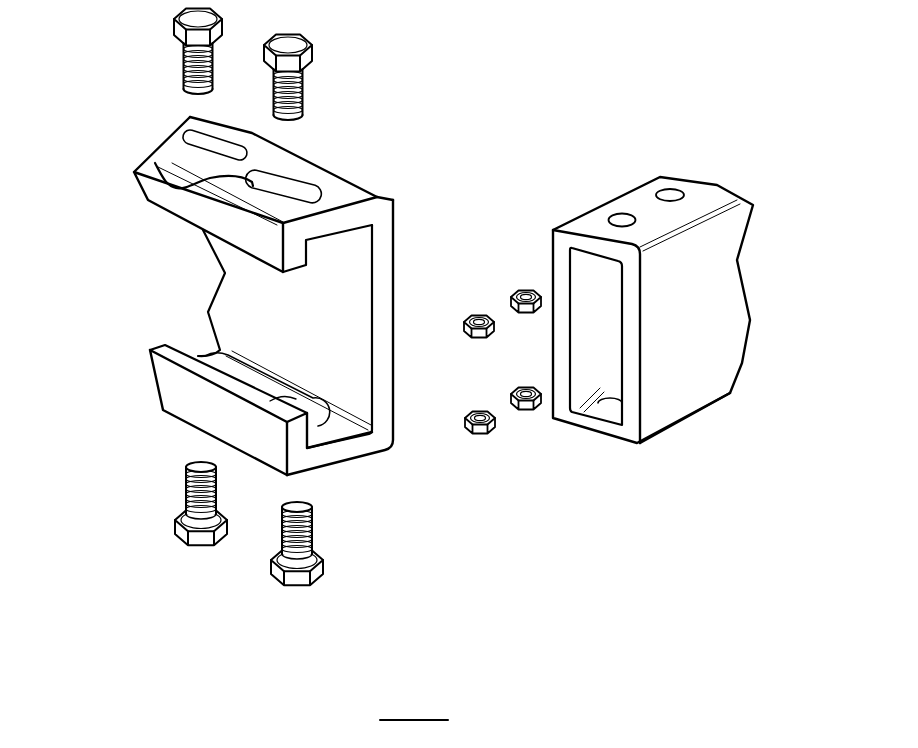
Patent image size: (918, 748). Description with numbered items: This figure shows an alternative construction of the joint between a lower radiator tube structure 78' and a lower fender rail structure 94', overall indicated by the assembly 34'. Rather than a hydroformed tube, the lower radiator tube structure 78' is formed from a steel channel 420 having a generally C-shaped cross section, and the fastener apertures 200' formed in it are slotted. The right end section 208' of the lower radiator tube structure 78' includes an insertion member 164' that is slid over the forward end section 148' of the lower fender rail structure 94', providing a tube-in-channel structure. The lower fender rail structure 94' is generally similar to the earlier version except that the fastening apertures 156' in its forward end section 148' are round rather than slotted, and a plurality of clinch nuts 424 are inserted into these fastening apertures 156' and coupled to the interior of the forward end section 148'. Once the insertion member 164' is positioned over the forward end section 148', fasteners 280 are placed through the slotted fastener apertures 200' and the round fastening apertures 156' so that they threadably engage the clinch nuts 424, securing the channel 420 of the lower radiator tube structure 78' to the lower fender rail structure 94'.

The bracket assembly 34' is at (417, 365).
The insertion member 164' is at (252, 297).
The lower radiator tube structure 78' is at (272, 284).
The right end section 208' is at (300, 194).
The fastener apertures 200' is at (214, 267).
The steel channel 420 is at (187, 400).
The fasteners 280 is at (195, 67).
The forward end section 148' is at (674, 329).
The lower fender rail structure 94' is at (703, 408).
The fastening apertures 156' is at (631, 329).
The clinch nuts 424 is at (478, 318).